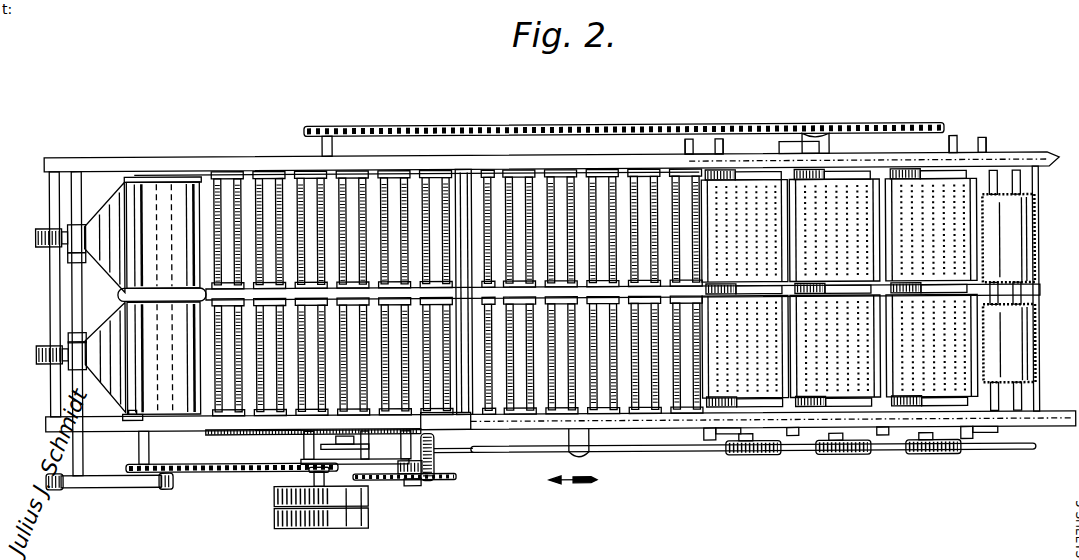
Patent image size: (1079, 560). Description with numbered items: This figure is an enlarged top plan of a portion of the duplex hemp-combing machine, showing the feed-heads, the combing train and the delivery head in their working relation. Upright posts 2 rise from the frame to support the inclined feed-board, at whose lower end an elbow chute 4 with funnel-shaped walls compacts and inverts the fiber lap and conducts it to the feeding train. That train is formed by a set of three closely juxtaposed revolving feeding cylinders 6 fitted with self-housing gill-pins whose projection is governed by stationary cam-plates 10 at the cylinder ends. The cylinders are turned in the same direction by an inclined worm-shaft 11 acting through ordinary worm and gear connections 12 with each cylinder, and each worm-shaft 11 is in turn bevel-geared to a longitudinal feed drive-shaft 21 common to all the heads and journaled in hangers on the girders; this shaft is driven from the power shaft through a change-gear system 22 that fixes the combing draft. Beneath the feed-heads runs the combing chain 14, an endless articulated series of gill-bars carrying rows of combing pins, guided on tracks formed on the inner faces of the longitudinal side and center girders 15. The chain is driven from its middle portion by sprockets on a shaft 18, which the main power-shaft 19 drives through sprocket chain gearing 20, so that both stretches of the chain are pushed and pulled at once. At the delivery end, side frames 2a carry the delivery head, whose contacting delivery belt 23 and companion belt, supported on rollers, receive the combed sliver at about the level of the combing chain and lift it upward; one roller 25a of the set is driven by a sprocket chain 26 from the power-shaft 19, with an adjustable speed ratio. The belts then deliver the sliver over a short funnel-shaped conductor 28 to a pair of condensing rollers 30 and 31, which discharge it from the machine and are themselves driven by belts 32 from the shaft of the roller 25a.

The upright posts 2 is at (702, 150).
The side frames 2a is at (153, 429).
The elbow chute 4 is at (987, 248).
The revolving feeding cylinders 6 is at (765, 190).
The cam-plates 10 is at (870, 173).
The worm-shaft 11 is at (657, 452).
The worm and gear connections 12 is at (765, 457).
The combing chain 14 is at (262, 390).
The longitudinal side and center girders 15 is at (595, 160).
The shaft 18 is at (822, 142).
The main power-shaft 19 is at (335, 134).
The sprocket chain gearing 20 is at (440, 128).
The longitudinal feed drive-shaft 21 is at (500, 447).
The change-gear system 22 is at (390, 466).
The delivery belt 23 is at (158, 187).
The driven roller 25a is at (133, 414).
The sprocket chain 26 is at (218, 472).
The funnel-shaped conductor 28 is at (115, 255).
The condensing roller 30 is at (70, 333).
The condensing roller 31 is at (35, 234).
The belts 32 is at (108, 485).